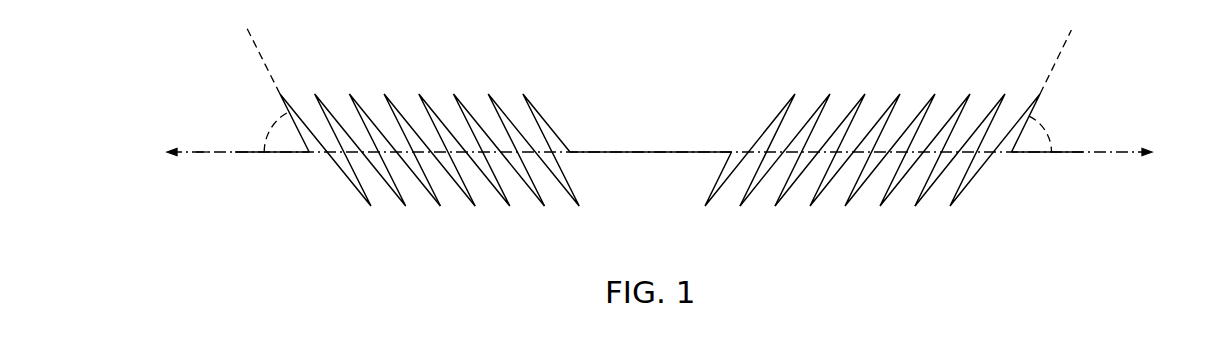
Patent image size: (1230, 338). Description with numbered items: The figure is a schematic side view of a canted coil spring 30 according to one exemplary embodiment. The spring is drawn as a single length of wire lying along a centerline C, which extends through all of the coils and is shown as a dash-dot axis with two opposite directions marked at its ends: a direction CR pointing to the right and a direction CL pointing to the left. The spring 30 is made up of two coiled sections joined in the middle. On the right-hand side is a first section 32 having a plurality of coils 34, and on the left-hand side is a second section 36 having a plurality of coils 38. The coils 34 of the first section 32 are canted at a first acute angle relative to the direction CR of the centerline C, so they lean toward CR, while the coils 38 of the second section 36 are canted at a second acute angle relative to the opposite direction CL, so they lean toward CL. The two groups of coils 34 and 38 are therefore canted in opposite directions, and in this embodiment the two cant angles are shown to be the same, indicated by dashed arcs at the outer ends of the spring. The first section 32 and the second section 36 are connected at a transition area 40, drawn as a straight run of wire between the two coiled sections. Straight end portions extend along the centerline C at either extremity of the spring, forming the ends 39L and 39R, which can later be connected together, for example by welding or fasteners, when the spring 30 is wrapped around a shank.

The canted coil spring 30 is at (486, 226).
The first section 32 is at (917, 72).
The coils 34 is at (821, 110).
The second section 36 is at (467, 70).
The coils 38 is at (396, 112).
The end 39L is at (245, 168).
The end 39R is at (1077, 170).
The transition area 40 is at (656, 124).
The centerline C is at (203, 154).
The direction of the centerline CL is at (641, 152).
The direction of the centerline CR is at (1167, 152).